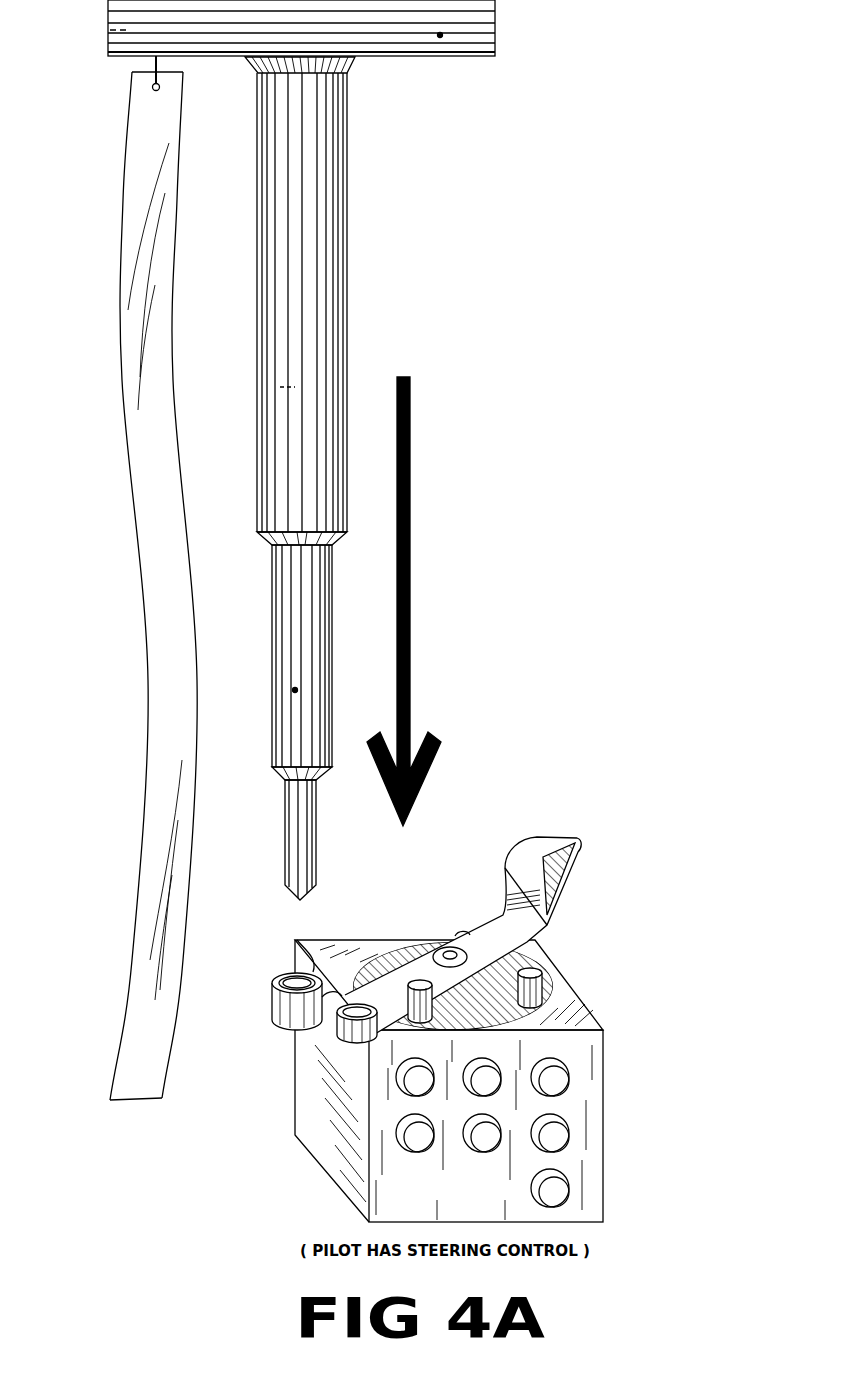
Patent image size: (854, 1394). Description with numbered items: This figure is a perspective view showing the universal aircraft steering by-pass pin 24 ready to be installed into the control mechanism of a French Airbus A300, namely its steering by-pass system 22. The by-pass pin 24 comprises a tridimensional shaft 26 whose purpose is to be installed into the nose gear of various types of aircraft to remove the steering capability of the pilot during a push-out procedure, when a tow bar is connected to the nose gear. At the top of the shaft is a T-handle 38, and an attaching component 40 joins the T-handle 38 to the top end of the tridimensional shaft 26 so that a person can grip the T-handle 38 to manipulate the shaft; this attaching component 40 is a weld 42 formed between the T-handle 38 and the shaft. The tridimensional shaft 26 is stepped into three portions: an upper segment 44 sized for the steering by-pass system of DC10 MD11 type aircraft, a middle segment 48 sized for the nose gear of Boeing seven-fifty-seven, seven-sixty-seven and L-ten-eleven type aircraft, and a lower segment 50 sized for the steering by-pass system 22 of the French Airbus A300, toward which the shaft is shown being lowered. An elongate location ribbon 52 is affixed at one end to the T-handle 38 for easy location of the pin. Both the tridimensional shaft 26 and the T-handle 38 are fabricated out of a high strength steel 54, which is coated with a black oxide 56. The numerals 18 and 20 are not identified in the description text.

The pivot ring boss 18 is at (330, 997).
The ring boss 20 is at (288, 978).
The steering by-pass system 22 is at (588, 1104).
The universal aircraft steering by-pass pin 24 is at (460, 201).
The tridimensional shaft 26 is at (346, 467).
The T-handle 38 is at (335, 28).
The attaching component 40 is at (358, 64).
The weld 42 is at (252, 64).
The upper segment 44 is at (273, 257).
The middle segment 48 is at (290, 607).
The lower segment 50 is at (298, 845).
The elongate location ribbon 52 is at (143, 525).
The high strength steel 54 is at (110, 30).
The black oxide 56 is at (440, 36).